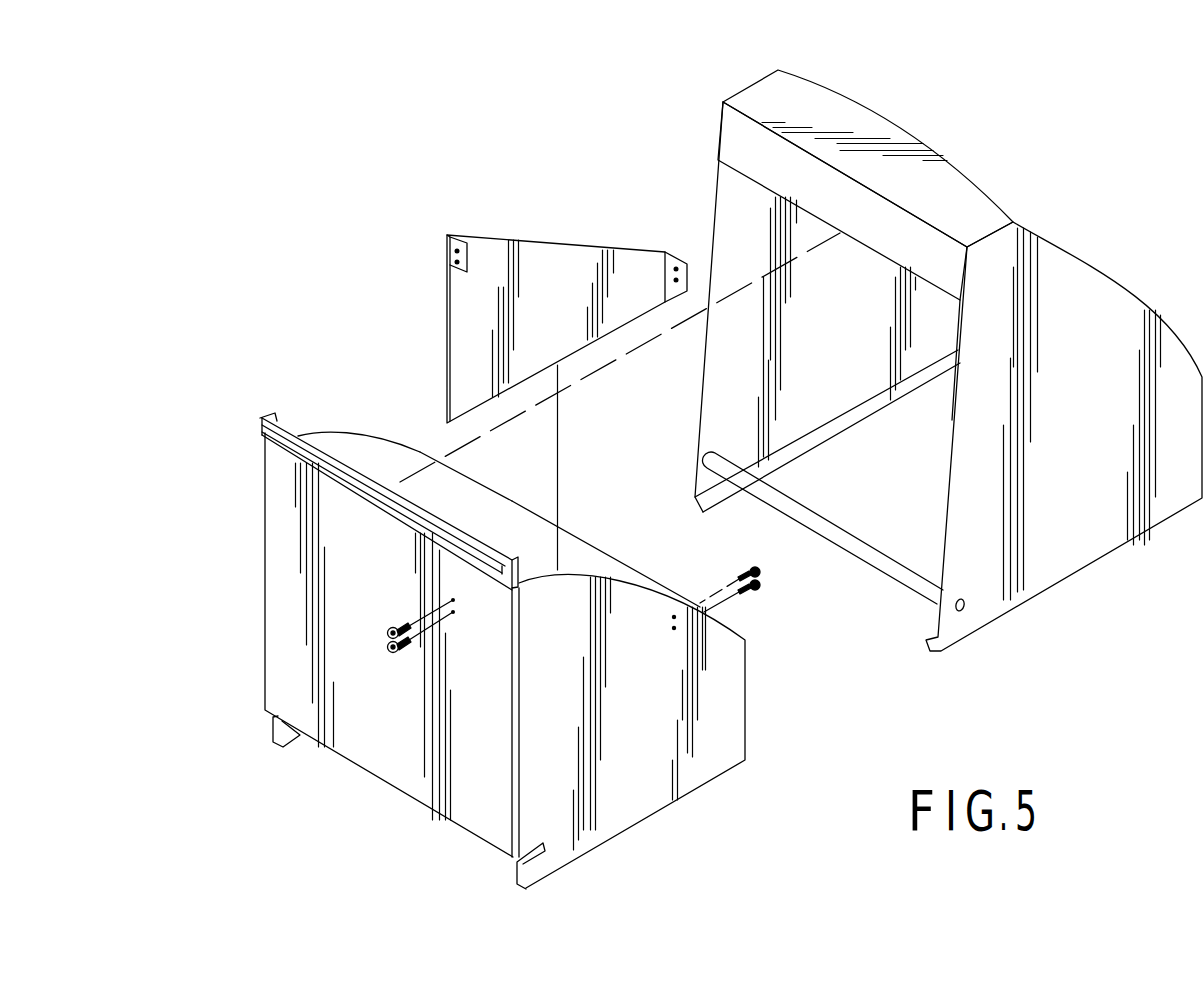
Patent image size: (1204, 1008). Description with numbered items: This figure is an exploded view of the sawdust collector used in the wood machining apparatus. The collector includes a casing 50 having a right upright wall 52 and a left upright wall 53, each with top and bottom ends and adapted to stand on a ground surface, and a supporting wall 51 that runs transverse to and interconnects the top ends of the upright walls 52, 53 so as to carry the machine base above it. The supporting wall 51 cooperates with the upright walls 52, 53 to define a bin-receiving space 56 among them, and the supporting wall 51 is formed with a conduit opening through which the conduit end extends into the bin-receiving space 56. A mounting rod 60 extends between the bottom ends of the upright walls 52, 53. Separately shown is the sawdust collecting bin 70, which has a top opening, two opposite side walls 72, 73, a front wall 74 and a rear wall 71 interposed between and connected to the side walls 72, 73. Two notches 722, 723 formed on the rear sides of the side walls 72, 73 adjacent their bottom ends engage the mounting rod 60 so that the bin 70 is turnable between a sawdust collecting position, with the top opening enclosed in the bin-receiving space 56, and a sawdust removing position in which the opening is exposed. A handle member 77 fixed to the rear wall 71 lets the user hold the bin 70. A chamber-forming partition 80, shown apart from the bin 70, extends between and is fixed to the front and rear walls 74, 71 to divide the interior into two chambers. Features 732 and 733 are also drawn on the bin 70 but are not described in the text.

The casing 50 is at (918, 370).
The supporting wall 51 is at (765, 93).
The right upright wall 52 is at (1055, 537).
The left upright wall 53 is at (730, 205).
The bin-receiving space 56 is at (905, 458).
The mounting rod 60 is at (850, 549).
The sawdust collecting bin 70 is at (463, 623).
The rear wall 71 is at (270, 598).
The side wall 72 is at (643, 785).
The side wall 73 is at (341, 446).
The front wall 74 is at (570, 555).
The handle member 77 is at (283, 443).
The chamber-forming partition 80 is at (516, 230).
The notch 722 is at (562, 852).
The notch 723 is at (598, 577).
The foot 732 is at (270, 716).
The top edge 733 is at (402, 448).